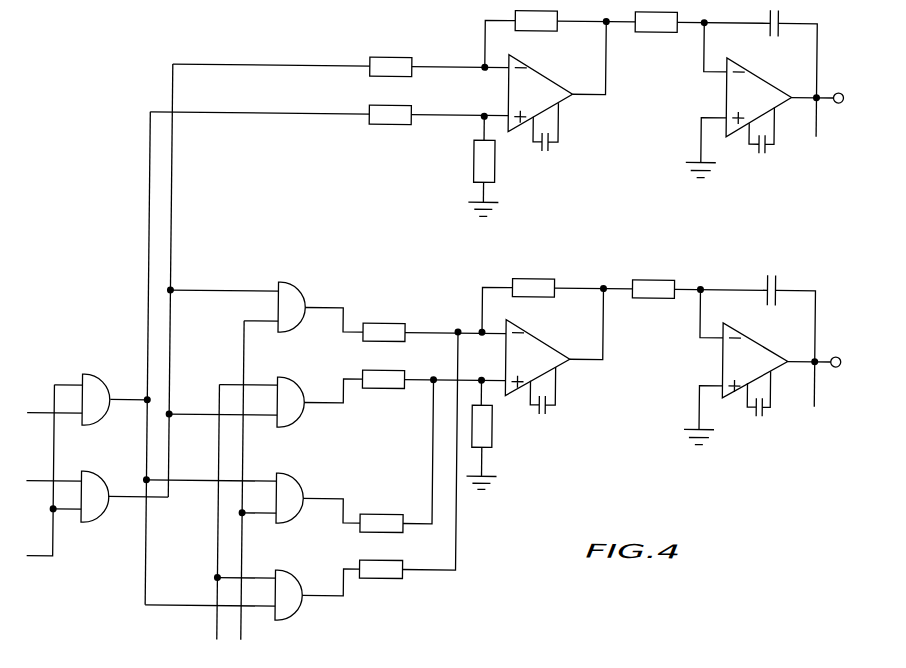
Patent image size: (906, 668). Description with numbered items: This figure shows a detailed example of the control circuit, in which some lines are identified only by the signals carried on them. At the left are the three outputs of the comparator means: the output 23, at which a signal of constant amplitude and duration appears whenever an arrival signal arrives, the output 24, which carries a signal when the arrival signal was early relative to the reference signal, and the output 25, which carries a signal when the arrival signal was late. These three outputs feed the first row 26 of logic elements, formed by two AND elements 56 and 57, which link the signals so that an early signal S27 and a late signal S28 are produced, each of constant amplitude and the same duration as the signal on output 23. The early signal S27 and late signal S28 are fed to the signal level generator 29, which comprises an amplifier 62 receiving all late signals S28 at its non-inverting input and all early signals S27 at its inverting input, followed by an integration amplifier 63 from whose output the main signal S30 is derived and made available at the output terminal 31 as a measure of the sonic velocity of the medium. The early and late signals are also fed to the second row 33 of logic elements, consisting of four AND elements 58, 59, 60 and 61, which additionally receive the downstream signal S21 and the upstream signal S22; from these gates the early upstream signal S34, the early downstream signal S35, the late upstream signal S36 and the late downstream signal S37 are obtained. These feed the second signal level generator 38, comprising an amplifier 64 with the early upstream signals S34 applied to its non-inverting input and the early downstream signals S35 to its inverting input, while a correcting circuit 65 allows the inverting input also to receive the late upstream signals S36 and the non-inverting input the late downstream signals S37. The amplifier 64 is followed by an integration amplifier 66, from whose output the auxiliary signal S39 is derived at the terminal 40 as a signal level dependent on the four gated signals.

The output 23 is at (42, 564).
The output 24 is at (41, 485).
The output 25 is at (39, 416).
The first row of logic elements 26 is at (96, 455).
The integrator 29 is at (499, 112).
The output terminal 31 is at (836, 88).
The second row of logic elements 33 is at (324, 430).
The integrator 38 is at (654, 384).
The output terminal 40 is at (838, 351).
The AND element 56 is at (99, 397).
The AND element 57 is at (97, 526).
The AND element 58 is at (290, 297).
The AND element 59 is at (291, 392).
The AND element 60 is at (292, 492).
The AND element 61 is at (293, 587).
The amplifier 62 is at (537, 87).
The integration amplifier 63 is at (767, 87).
The amplifier 64 is at (545, 344).
The correcting circuit 65 is at (402, 478).
The integration amplifier 66 is at (770, 345).
The downstream signal S21 is at (218, 637).
The upstream signal S22 is at (243, 634).
The early signal S27 is at (171, 228).
The late signal S28 is at (148, 188).
The main signal S30 is at (813, 131).
The early upstream signal S34 is at (344, 393).
The early downstream signal S35 is at (333, 304).
The late upstream signal S36 is at (346, 588).
The late downstream signal S37 is at (335, 498).
The auxiliary signal S39 is at (814, 393).